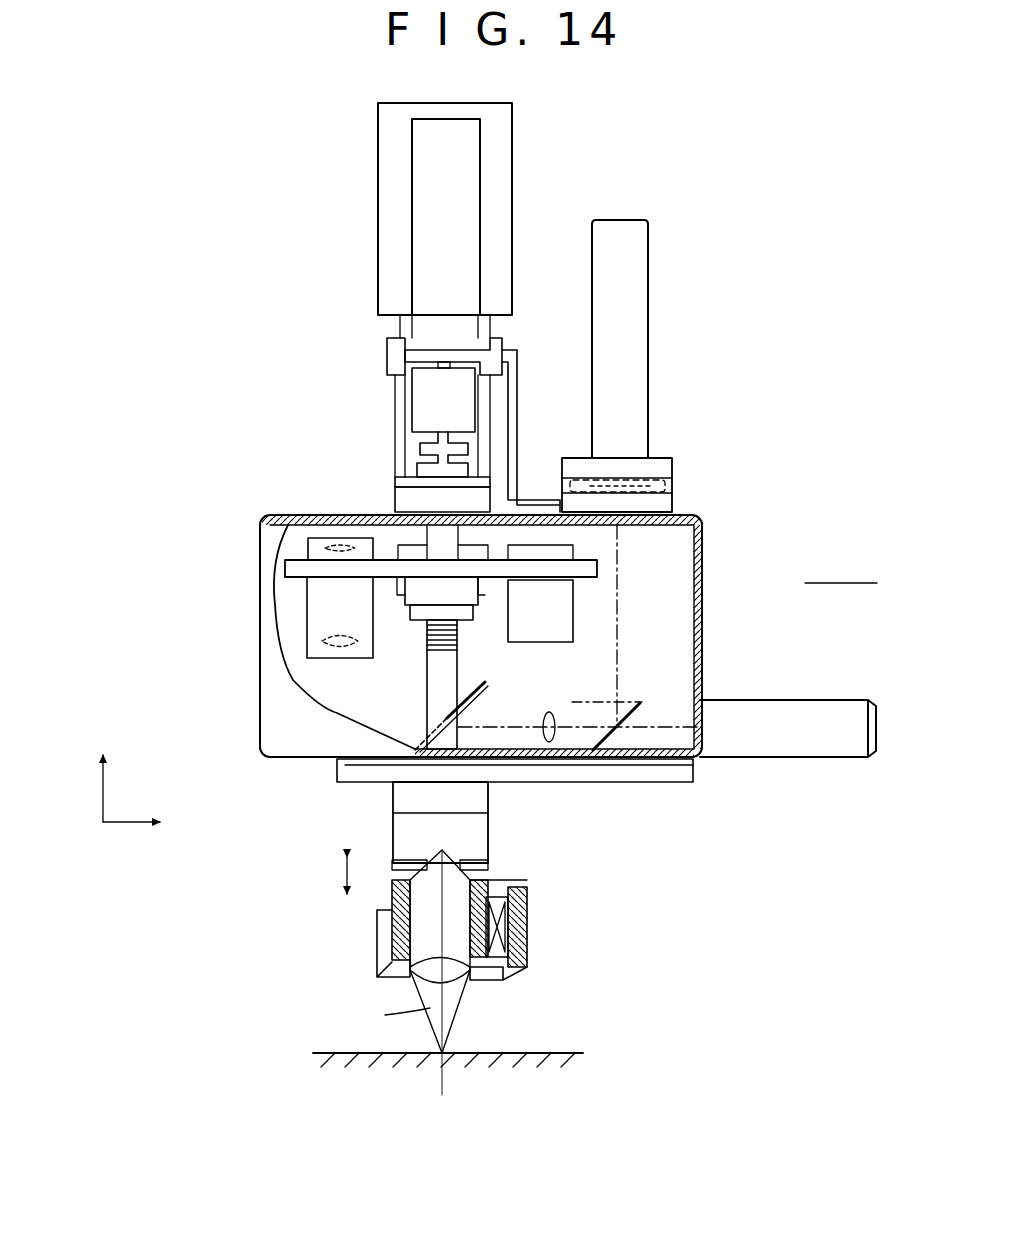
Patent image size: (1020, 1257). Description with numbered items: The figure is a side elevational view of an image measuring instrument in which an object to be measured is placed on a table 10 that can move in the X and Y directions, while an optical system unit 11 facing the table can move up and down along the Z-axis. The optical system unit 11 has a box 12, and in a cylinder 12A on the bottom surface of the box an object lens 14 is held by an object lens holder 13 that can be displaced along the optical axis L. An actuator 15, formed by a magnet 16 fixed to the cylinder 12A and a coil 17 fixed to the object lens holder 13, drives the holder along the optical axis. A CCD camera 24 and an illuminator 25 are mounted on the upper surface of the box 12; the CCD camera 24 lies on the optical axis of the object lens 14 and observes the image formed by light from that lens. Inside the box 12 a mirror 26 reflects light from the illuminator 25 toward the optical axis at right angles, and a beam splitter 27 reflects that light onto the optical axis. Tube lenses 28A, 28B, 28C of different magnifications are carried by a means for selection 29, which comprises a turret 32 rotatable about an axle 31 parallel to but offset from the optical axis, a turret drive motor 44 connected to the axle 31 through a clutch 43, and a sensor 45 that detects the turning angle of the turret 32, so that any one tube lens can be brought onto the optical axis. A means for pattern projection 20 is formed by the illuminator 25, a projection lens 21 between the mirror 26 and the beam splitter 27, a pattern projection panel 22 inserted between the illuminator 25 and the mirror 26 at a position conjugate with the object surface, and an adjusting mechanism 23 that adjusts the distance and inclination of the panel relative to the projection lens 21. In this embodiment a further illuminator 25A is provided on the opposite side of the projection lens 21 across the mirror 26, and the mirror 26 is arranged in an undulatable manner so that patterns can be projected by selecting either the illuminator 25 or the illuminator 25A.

The table 10 is at (335, 1053).
The optical system unit 11 is at (203, 228).
The box 12 is at (262, 740).
The cylinder 12A is at (393, 823).
The object lens holder 13 is at (377, 935).
The object lens 14 is at (455, 983).
The actuator 15 is at (623, 942).
The magnet 16 is at (583, 900).
The coil 17 is at (527, 950).
The means for pattern projection 20 is at (736, 442).
The projection lens 21 is at (557, 733).
The pattern projection panel 22 is at (752, 438).
The adjusting mechanism 23 is at (672, 482).
The CCD camera 24 is at (378, 183).
The illuminator 25 is at (630, 298).
The illuminator 25A is at (823, 748).
The mirror 26 is at (607, 698).
The beam splitter 27 is at (480, 695).
The tube lens 28A is at (553, 642).
The tube lens 28B is at (345, 658).
The tube lens 28C is at (395, 543).
The means for selection 29 is at (335, 478).
The axle 31 is at (427, 672).
The turret 32 is at (285, 570).
The clutch 43 is at (412, 398).
The turret drive motor 44 is at (412, 280).
The sensor 45 is at (417, 447).